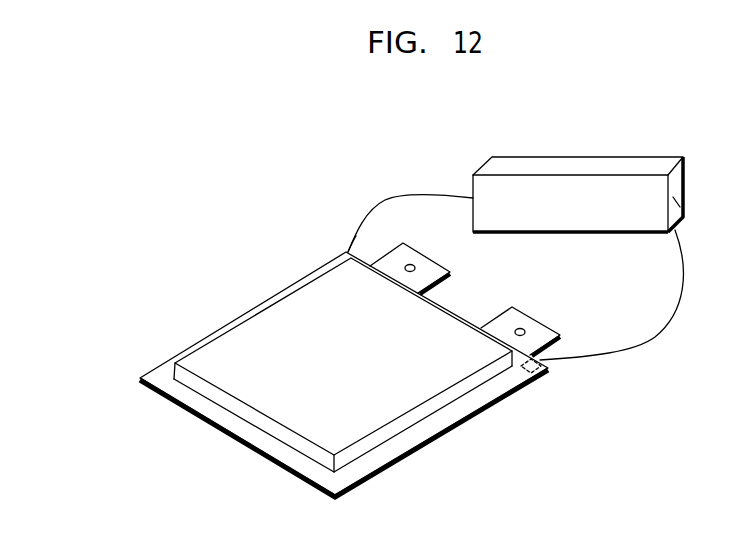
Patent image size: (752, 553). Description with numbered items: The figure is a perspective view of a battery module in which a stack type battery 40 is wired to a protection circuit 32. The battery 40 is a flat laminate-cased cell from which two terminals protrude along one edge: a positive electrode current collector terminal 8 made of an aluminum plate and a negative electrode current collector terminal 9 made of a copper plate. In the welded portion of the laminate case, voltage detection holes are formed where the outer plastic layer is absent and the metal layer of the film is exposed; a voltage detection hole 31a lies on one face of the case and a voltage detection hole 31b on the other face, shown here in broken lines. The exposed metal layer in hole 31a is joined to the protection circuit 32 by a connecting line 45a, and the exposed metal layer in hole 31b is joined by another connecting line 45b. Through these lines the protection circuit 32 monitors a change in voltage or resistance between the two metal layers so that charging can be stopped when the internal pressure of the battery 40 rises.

The stacked type battery 40 is at (187, 310).
The negative electrode current collector terminal 9 is at (437, 272).
The positive electrode current collector terminal 8 is at (540, 333).
The protection circuit 32 is at (628, 163).
The connecting line 45a is at (407, 193).
The other connecting line 45b is at (653, 337).
The voltage detection hole 31a is at (348, 252).
The voltage detection hole 31b is at (533, 374).